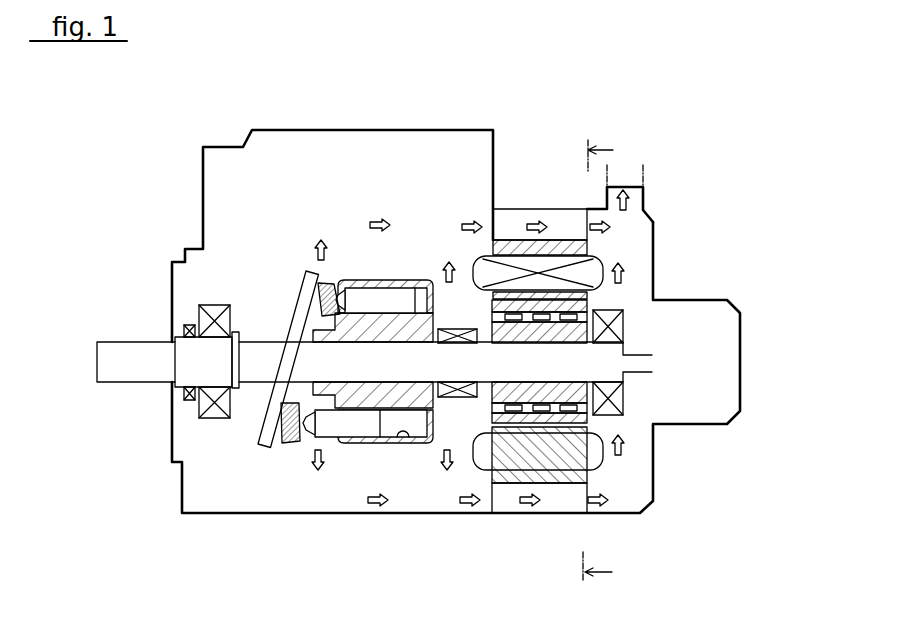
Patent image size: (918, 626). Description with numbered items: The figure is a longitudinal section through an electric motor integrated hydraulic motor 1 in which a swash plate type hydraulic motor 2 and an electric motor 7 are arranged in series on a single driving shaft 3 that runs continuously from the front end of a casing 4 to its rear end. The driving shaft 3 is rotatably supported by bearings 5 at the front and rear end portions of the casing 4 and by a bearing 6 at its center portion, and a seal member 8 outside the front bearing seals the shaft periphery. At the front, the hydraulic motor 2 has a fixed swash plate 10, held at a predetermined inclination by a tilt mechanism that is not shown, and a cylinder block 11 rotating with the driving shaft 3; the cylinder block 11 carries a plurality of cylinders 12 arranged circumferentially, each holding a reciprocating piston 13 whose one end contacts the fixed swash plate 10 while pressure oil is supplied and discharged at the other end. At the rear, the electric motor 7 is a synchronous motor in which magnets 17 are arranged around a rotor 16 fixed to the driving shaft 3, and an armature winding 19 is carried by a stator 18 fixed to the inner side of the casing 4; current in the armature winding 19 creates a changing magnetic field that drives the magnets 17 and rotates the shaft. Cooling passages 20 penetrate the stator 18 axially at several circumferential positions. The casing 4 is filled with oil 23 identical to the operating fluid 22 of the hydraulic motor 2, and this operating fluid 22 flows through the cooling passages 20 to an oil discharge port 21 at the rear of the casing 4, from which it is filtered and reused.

The electric motor integrated hydraulic motor 1 is at (780, 104).
The swash plate type hydraulic motor 2 is at (370, 320).
The driving shaft 3 is at (130, 378).
The casing 4 is at (202, 200).
The bearings 5 is at (213, 413).
The bearing 6 is at (453, 397).
The electric motor 7 is at (631, 320).
The seal member 8 is at (187, 400).
The fixed swash plate 10 is at (303, 292).
The cylinder block 11 is at (408, 283).
The cylinders 12 is at (410, 437).
The piston 13 is at (357, 423).
The rotor 16 is at (590, 424).
The magnets 17 is at (518, 408).
The stator 18 is at (513, 235).
The armature winding 19 is at (593, 260).
The cooling passages 20 is at (567, 223).
The oil discharge port 21 is at (628, 186).
The operating fluid 22 is at (378, 215).
The oil 23 is at (304, 199).